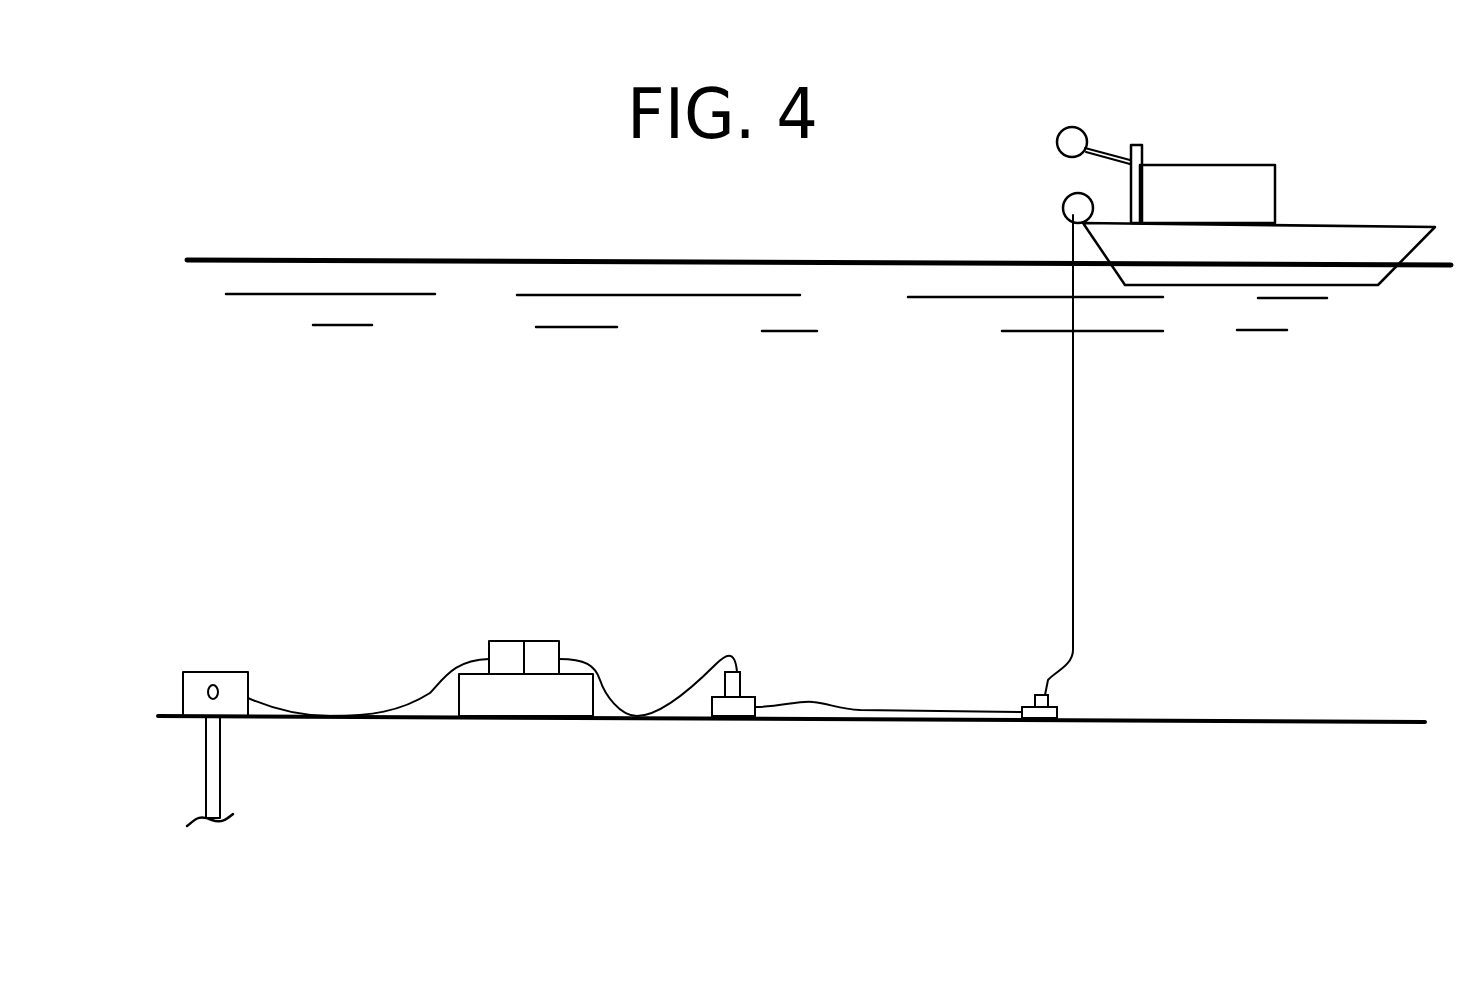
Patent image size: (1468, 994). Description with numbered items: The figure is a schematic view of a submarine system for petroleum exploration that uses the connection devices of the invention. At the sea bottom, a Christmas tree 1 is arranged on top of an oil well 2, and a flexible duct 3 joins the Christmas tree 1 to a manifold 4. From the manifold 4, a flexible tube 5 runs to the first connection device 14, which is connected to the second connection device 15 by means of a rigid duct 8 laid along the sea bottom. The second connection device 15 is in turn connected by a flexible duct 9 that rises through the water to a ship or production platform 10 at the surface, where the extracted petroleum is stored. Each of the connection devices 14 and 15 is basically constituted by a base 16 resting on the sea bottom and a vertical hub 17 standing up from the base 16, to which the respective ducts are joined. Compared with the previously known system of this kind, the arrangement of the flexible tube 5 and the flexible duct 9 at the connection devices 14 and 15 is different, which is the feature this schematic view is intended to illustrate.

The Christmas tree 1 is at (233, 680).
The oil well 2 is at (220, 775).
The flexible duct 3 is at (328, 710).
The manifold 4 is at (518, 640).
The flexible tube 5 is at (609, 678).
The rigid duct 8 is at (848, 710).
The flexible duct 9 is at (1074, 585).
The ship or production platform 10 is at (1255, 180).
The connection device 14 is at (760, 688).
The connection device 15 is at (1025, 685).
The base 16 is at (728, 705).
The vertical hub 17 is at (740, 680).